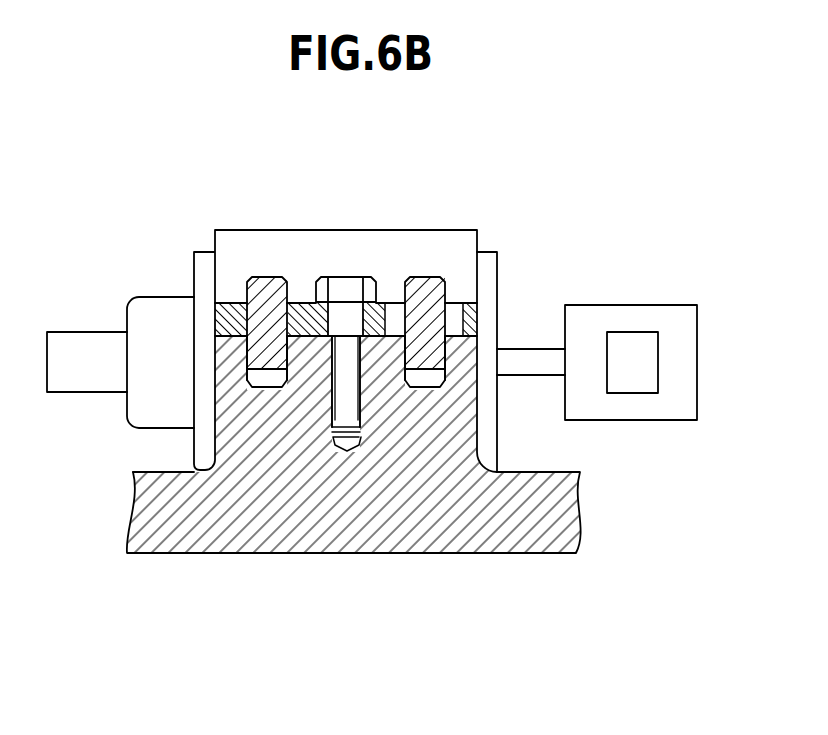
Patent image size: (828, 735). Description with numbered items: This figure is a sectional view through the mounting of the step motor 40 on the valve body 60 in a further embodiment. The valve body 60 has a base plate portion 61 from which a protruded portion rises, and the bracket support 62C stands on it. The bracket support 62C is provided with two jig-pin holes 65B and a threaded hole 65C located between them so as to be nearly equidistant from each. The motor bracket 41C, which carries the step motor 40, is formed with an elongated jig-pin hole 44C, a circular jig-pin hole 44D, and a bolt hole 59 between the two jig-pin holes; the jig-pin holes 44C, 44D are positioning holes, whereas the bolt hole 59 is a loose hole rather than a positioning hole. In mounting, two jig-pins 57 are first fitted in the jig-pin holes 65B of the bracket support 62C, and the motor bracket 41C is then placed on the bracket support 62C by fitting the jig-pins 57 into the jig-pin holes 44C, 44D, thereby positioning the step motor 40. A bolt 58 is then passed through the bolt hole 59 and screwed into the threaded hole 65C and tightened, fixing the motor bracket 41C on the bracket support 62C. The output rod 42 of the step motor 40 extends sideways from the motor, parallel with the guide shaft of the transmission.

The step motor 40 is at (485, 252).
The motor bracket 41C is at (223, 248).
The output rod 42 is at (533, 345).
The elongated jig-pin hole 44C is at (392, 305).
The circular jig-pin hole 44D is at (266, 305).
The jig-pin 57 is at (280, 280).
The bolt 58 is at (351, 283).
The bolt hole 59 is at (338, 287).
The valve body 60 is at (168, 577).
The base plate portion 61 is at (157, 471).
The bracket support 62C is at (292, 422).
The jig-pin hole 65B is at (247, 355).
The threaded hole 65C is at (348, 445).